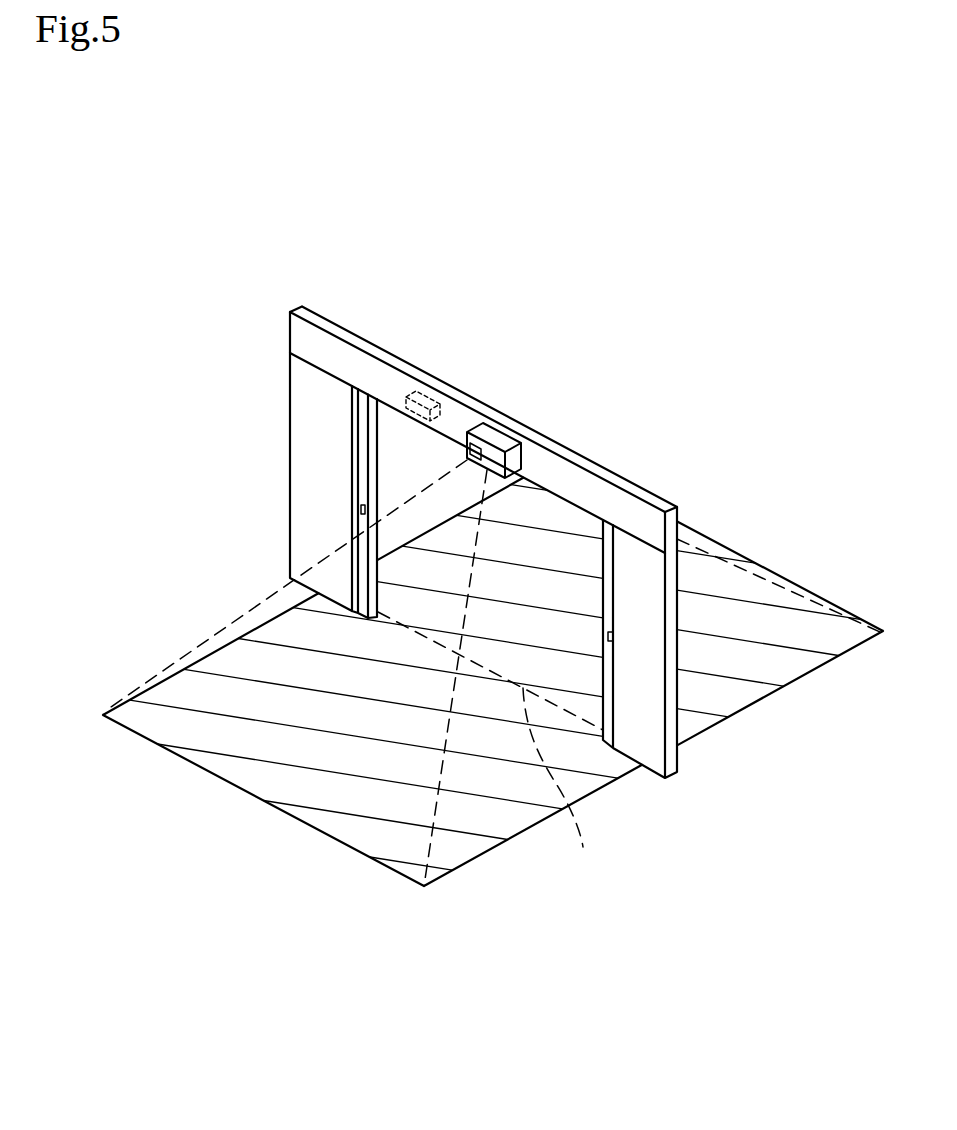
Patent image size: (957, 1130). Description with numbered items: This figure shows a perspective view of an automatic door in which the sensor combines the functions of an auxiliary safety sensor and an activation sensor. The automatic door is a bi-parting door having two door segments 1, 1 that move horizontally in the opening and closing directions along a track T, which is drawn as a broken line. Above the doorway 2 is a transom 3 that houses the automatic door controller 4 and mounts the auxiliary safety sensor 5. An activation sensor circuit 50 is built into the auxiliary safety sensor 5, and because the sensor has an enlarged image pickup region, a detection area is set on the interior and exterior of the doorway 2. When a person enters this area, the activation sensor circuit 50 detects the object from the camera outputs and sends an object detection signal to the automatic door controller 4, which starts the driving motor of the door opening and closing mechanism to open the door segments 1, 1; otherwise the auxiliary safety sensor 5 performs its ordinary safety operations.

The door segments 1 is at (200, 300).
The doorway 2 is at (532, 637).
The transom 3 is at (605, 477).
The automatic door controller 4 is at (433, 390).
The auxiliary safety sensor 5 is at (508, 447).
The activation sensor circuit 50 is at (494, 438).
The track T is at (560, 788).